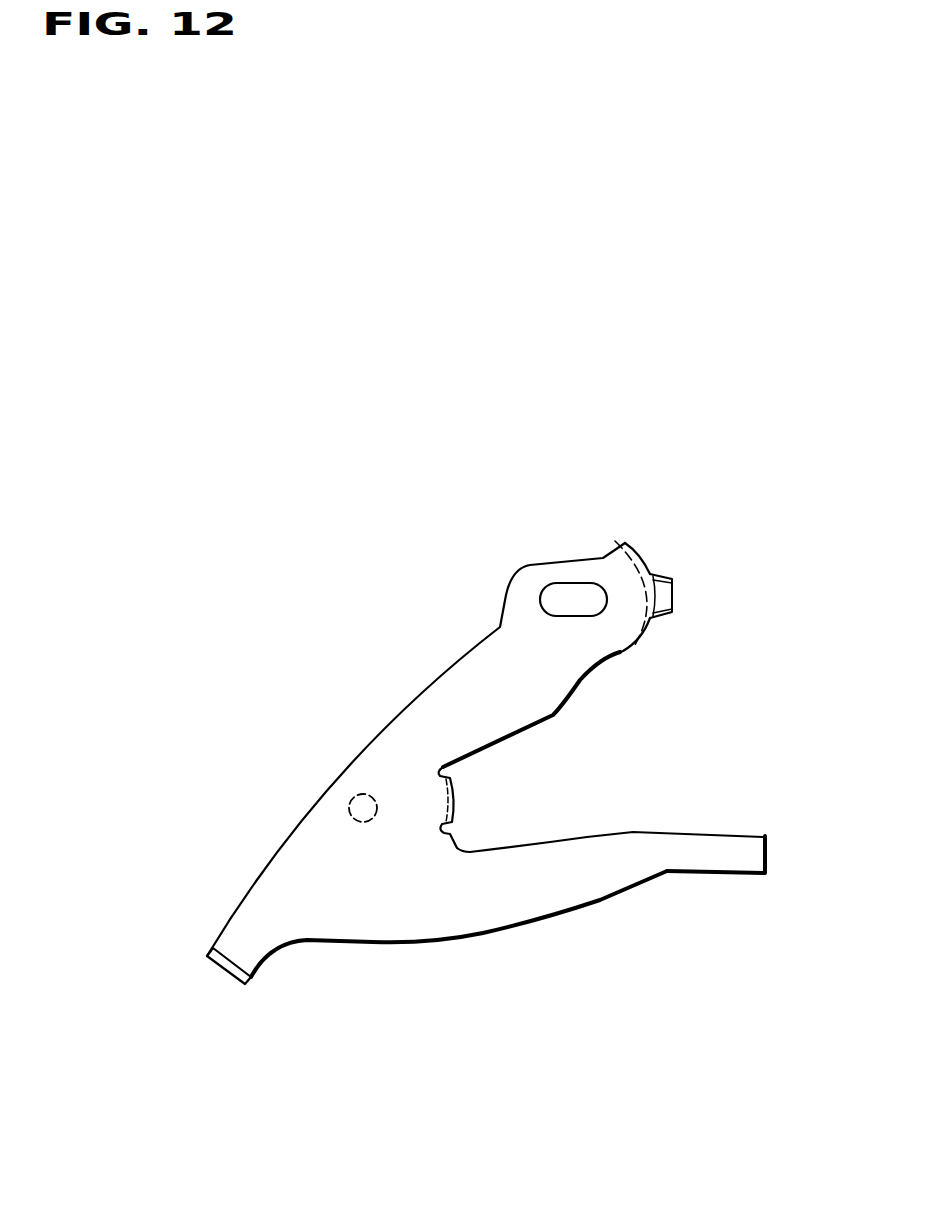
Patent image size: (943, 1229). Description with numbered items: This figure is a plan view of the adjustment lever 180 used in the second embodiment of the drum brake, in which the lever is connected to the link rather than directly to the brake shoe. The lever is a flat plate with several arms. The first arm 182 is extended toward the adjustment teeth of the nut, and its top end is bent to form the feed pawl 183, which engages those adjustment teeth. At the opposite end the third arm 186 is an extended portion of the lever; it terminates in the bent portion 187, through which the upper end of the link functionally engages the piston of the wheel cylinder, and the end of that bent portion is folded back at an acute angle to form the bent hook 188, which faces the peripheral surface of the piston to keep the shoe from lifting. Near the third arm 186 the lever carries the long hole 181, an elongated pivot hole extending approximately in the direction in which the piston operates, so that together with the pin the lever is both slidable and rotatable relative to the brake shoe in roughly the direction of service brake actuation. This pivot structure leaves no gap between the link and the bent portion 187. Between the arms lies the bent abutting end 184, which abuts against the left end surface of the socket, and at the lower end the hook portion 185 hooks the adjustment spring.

The adjustment lever 180 is at (534, 757).
The long hole 181 is at (578, 592).
The first arm 182 is at (562, 903).
The feed pawl 183 is at (767, 853).
The bent abutting end 184 is at (455, 788).
The hook portion 185 is at (232, 978).
The third arm 186 is at (612, 557).
The bent portion 187 is at (677, 587).
The bent hook 188 is at (676, 610).